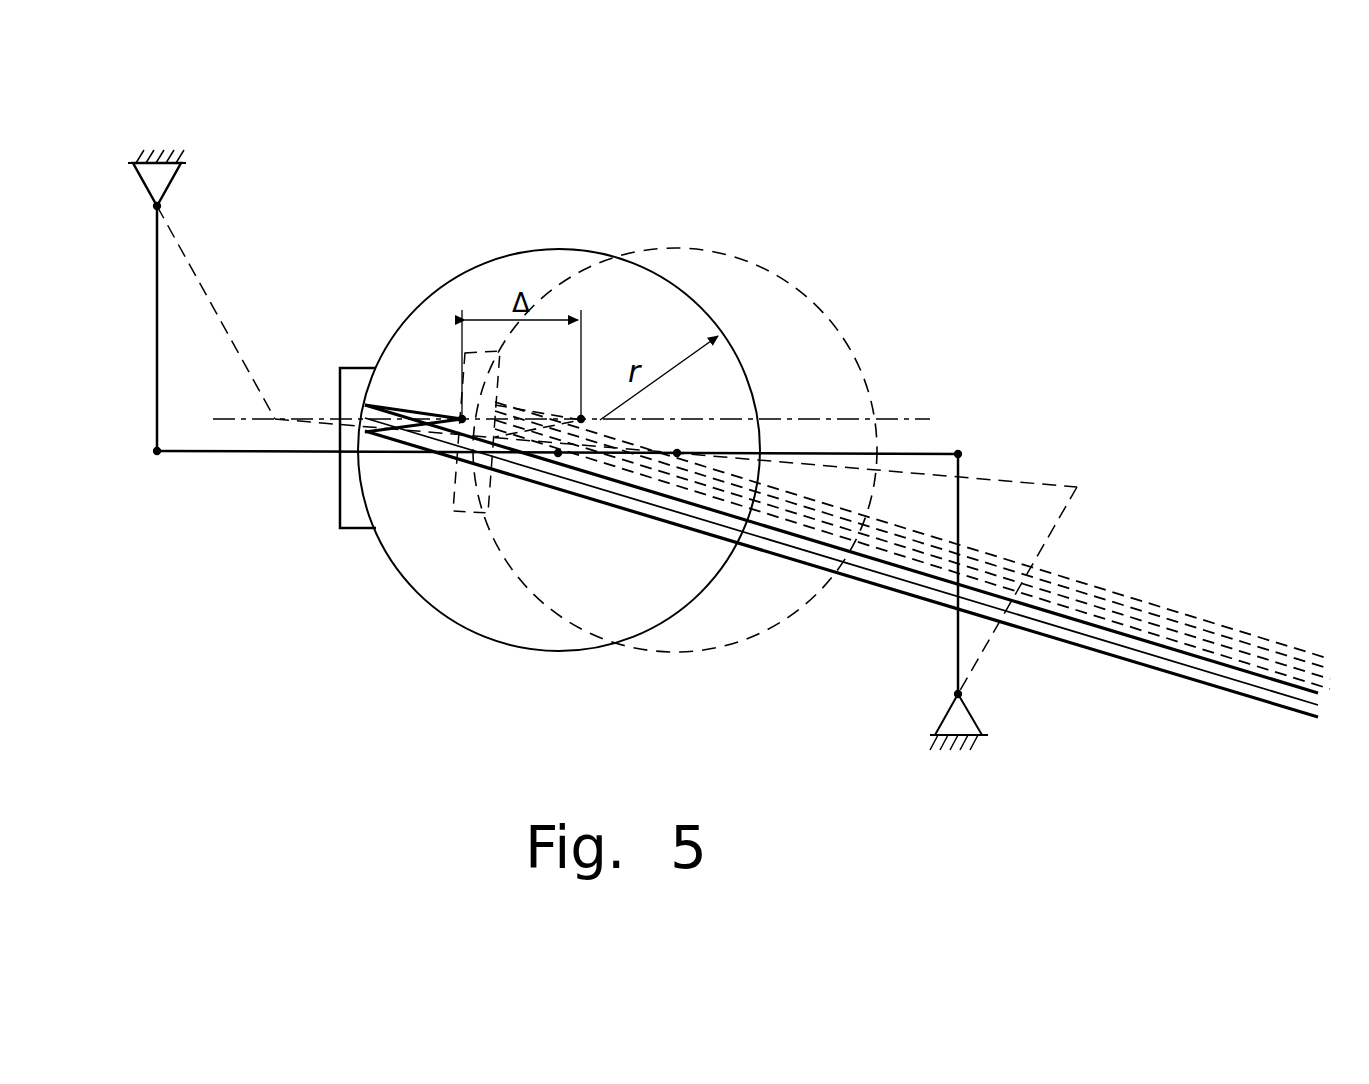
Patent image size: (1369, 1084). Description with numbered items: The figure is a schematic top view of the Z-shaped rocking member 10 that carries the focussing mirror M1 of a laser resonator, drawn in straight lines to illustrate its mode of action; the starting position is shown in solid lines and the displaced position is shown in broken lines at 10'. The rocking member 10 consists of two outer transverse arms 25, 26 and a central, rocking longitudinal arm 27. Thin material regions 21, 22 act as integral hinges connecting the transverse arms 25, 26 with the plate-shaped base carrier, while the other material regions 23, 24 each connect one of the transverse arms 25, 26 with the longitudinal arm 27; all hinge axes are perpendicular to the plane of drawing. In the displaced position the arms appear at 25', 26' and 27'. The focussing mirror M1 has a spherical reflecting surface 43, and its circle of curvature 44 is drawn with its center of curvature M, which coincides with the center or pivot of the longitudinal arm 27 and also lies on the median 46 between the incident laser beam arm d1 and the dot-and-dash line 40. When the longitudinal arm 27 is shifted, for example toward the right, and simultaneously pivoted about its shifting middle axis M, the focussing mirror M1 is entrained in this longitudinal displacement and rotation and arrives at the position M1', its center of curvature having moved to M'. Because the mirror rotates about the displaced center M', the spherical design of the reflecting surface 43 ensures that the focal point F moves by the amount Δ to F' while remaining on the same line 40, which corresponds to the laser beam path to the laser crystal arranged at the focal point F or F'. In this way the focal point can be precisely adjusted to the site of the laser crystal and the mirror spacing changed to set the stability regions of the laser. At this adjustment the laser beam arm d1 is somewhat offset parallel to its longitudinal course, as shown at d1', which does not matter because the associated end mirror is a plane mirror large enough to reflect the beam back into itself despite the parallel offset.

The rocking member 10 is at (557, 517).
The displaced position of rocking member 10' is at (270, 301).
The material region 21 is at (153, 208).
The material region 22 is at (962, 696).
The material region 23 is at (154, 455).
The material region 24 is at (962, 453).
The transverse arm 25 is at (112, 328).
The displaced transverse arm 25' is at (216, 294).
The transverse arm 26 is at (999, 574).
The displaced transverse arm 26' is at (1063, 590).
The longitudinal arm 27 is at (557, 494).
The displaced longitudinal arm 27' is at (725, 453).
The line 40 is at (918, 418).
The spherical reflecting surface 43 is at (366, 485).
The circle of curvature 44 is at (476, 262).
The median 46 is at (847, 590).
The focussing mirror M1 is at (339, 488).
The displaced focussing mirror M1' is at (461, 470).
The focal point F is at (442, 366).
The displaced focal point F' is at (560, 366).
The center of curvature M is at (539, 500).
The displaced center of curvature M' is at (708, 412).
The laser beam arm d1 is at (841, 591).
The offset laser beam arm d1' is at (912, 545).